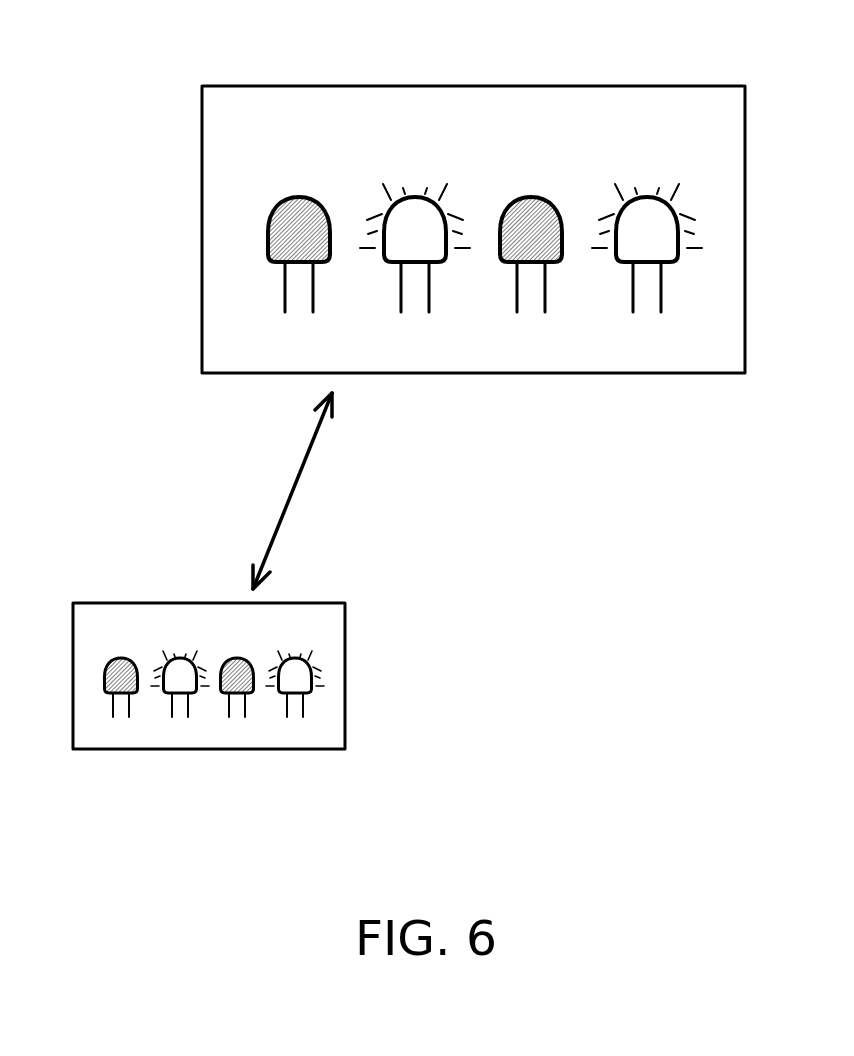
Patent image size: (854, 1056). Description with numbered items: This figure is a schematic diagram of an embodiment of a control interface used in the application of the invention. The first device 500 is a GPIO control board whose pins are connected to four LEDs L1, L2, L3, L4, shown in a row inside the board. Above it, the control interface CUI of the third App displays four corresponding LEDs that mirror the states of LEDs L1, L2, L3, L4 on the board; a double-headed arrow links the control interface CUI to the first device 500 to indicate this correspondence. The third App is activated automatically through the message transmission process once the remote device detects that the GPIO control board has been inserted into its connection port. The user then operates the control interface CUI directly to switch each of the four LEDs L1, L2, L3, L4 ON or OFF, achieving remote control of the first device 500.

The control interface CUI is at (472, 86).
The first device 500 is at (345, 676).
The LED L1 is at (300, 196).
The LED L2 is at (416, 196).
The LED L3 is at (532, 196).
The LED L4 is at (648, 196).